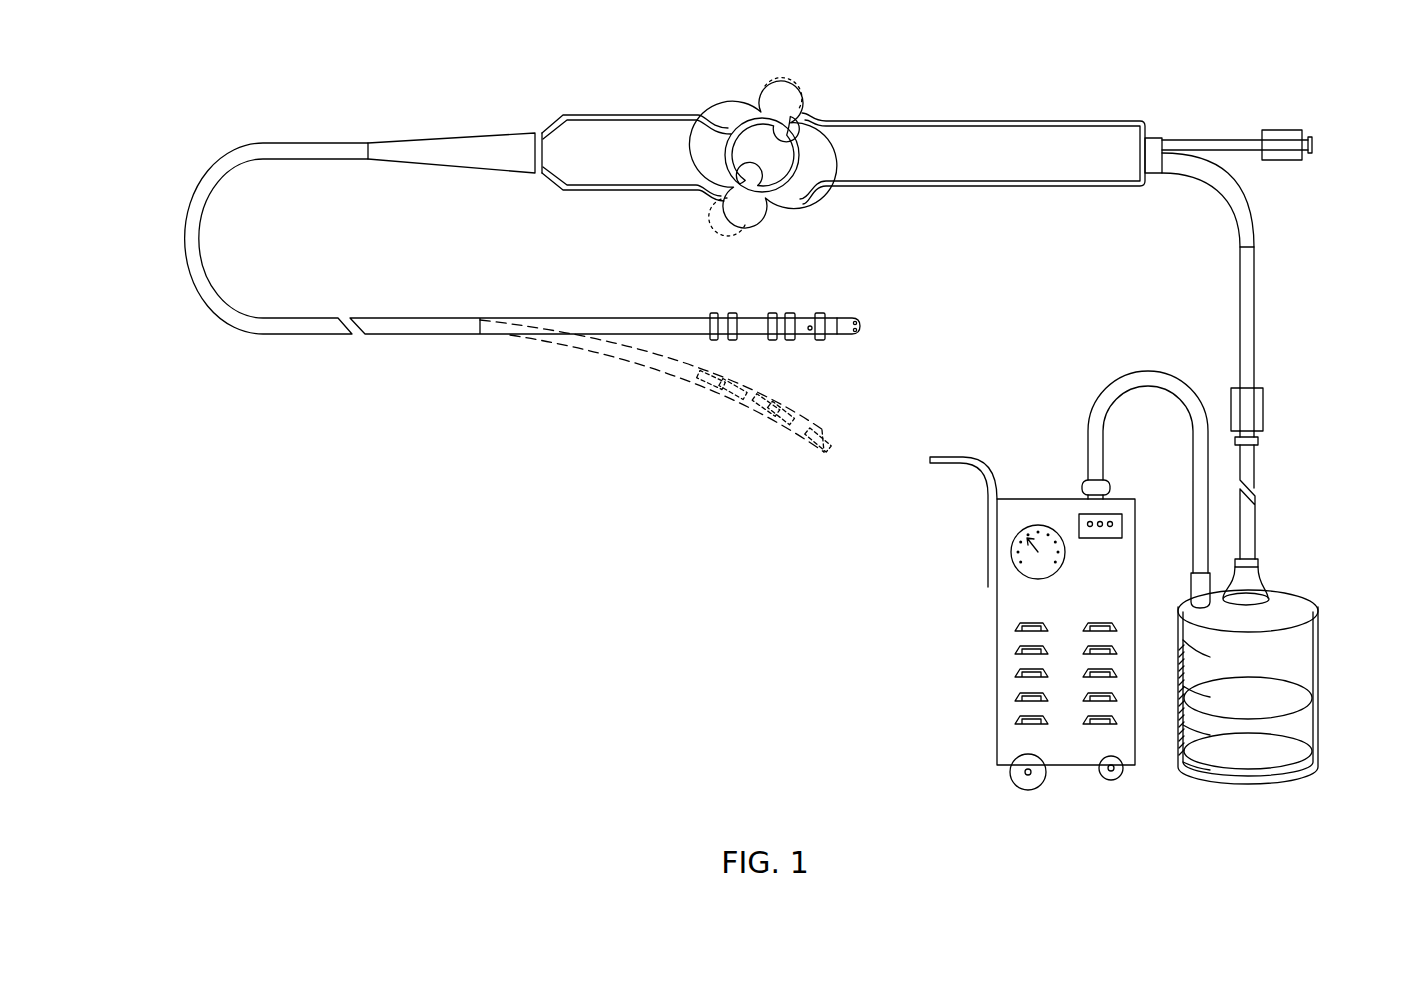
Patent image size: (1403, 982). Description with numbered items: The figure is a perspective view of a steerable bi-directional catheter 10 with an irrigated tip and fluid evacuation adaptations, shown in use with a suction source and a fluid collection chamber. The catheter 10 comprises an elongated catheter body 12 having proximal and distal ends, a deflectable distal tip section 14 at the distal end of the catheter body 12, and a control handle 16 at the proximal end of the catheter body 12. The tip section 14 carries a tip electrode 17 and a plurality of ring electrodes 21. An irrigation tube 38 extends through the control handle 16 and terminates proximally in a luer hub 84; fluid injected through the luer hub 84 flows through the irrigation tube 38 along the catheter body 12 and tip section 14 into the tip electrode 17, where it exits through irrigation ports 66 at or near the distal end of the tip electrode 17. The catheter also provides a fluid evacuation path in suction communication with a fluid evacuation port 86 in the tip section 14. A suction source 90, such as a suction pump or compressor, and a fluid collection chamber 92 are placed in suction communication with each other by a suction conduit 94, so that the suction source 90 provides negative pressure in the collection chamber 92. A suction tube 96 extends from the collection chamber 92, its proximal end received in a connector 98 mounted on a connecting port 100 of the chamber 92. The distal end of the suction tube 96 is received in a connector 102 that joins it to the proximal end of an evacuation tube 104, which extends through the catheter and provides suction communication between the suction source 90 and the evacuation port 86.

The catheter 10 is at (478, 73).
The catheter body 12 is at (185, 240).
The tip section 14 is at (600, 318).
The control handle 16 is at (985, 187).
The tip electrode 17 is at (845, 318).
The ring electrodes 21 is at (770, 313).
The irrigation tube 38 is at (1208, 140).
The irrigation ports 66 is at (862, 331).
The luer hub 84 is at (1280, 130).
The fluid evacuation port 86 is at (810, 332).
The suction source 90 is at (997, 680).
The fluid collection chamber 92 is at (1317, 663).
The suction conduit 94 is at (1147, 371).
The suction tube 96 is at (1254, 528).
The connector 98 is at (1258, 565).
The connecting port 100 is at (1300, 597).
The connector 102 is at (1263, 408).
The evacuation tube 104 is at (1254, 210).